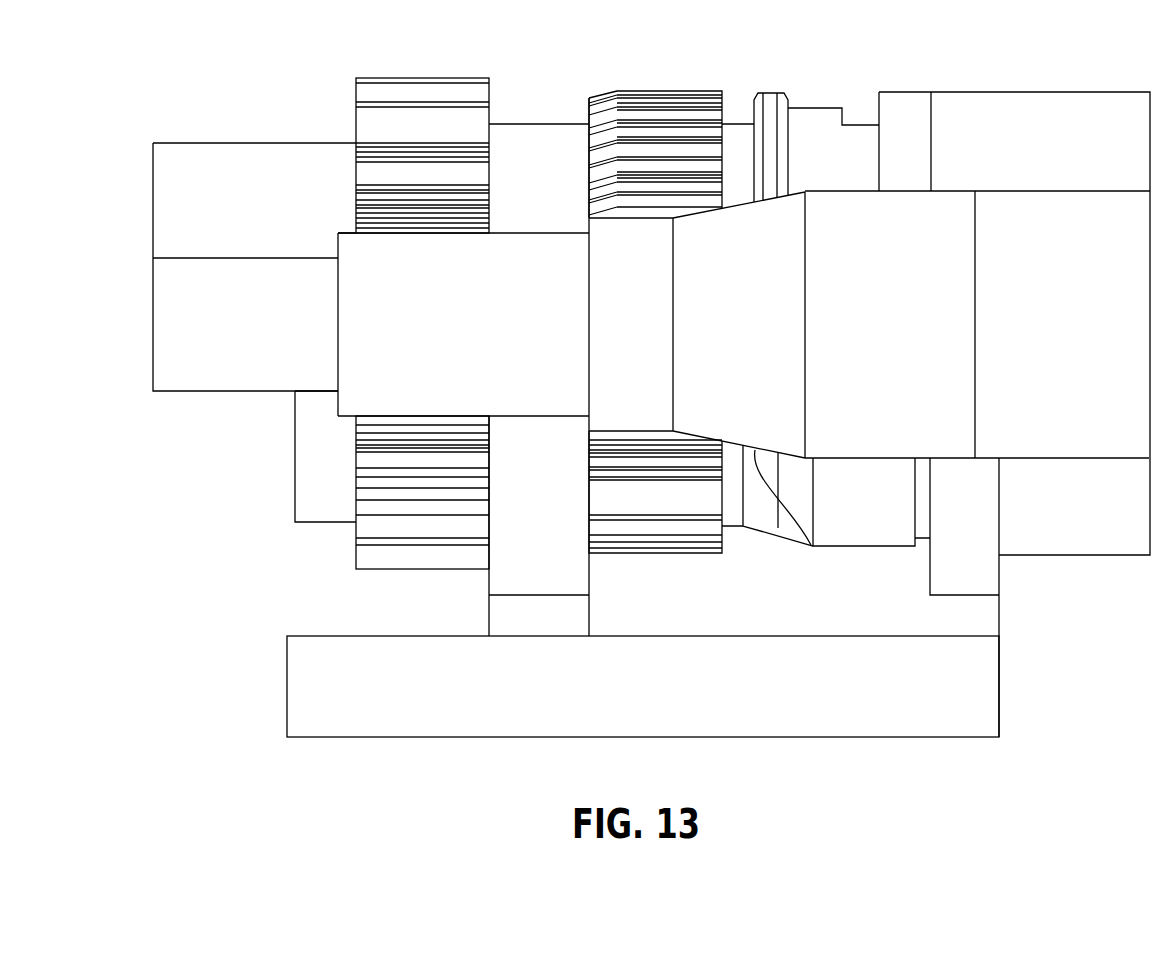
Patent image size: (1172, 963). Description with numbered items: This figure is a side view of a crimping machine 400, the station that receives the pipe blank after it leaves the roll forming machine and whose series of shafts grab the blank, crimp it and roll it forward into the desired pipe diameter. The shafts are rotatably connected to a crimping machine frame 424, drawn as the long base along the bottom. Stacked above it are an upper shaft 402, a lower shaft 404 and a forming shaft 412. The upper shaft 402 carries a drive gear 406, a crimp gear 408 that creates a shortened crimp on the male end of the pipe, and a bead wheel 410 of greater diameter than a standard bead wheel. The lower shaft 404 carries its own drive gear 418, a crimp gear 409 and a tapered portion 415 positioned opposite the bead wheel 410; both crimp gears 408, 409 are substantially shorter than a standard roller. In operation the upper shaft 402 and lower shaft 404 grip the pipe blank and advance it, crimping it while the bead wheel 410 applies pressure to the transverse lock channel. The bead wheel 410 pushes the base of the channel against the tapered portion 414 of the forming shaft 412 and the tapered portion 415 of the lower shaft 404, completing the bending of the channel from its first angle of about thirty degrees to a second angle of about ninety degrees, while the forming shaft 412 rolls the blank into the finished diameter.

The crimping machine 400 is at (1063, 619).
The upper shaft 402 is at (152, 204).
The lower shaft 404 is at (294, 464).
The drive gear 406 is at (431, 78).
The crimp gear 408 is at (658, 90).
The crimp gear 409 is at (645, 557).
The bead wheel 410 is at (770, 92).
The forming shaft 412 is at (152, 339).
The tapered portion 414 is at (806, 545).
The tapered portion 415 is at (763, 529).
The drive gear 418 is at (408, 571).
The crimping machine frame 424 is at (999, 694).